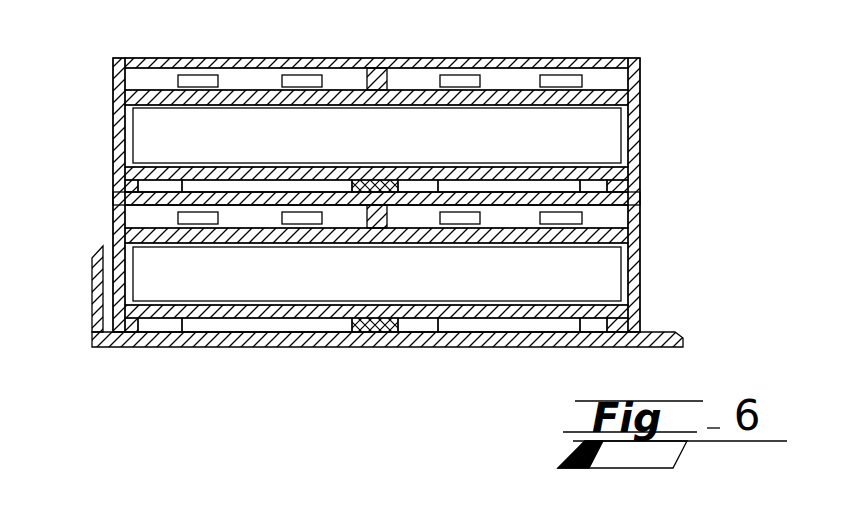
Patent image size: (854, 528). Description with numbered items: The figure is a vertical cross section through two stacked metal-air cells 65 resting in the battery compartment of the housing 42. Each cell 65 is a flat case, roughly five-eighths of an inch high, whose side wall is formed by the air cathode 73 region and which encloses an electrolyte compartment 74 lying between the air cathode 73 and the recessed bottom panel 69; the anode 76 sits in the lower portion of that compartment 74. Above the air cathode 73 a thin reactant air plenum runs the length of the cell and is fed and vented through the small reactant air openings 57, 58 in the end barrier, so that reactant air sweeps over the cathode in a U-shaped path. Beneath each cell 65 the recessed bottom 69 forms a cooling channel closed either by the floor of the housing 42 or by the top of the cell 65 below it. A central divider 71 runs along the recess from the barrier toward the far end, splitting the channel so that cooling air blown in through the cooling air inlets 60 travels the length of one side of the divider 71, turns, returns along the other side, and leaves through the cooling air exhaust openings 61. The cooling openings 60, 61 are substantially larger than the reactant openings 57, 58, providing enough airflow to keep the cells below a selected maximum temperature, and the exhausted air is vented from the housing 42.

The housing 42 is at (93, 293).
The reactant air opening 57 is at (483, 82).
The reactant air opening 58 is at (237, 75).
The cooling air inlet 60 is at (513, 186).
The cooling air exhaust opening 61 is at (237, 188).
The metal-air cell 65 is at (647, 112).
The recessed bottom panel 69 is at (607, 182).
The divider 71 is at (386, 181).
The air cathode 73 is at (137, 78).
The electrolyte compartment 74 is at (130, 130).
The anode 76 is at (612, 135).